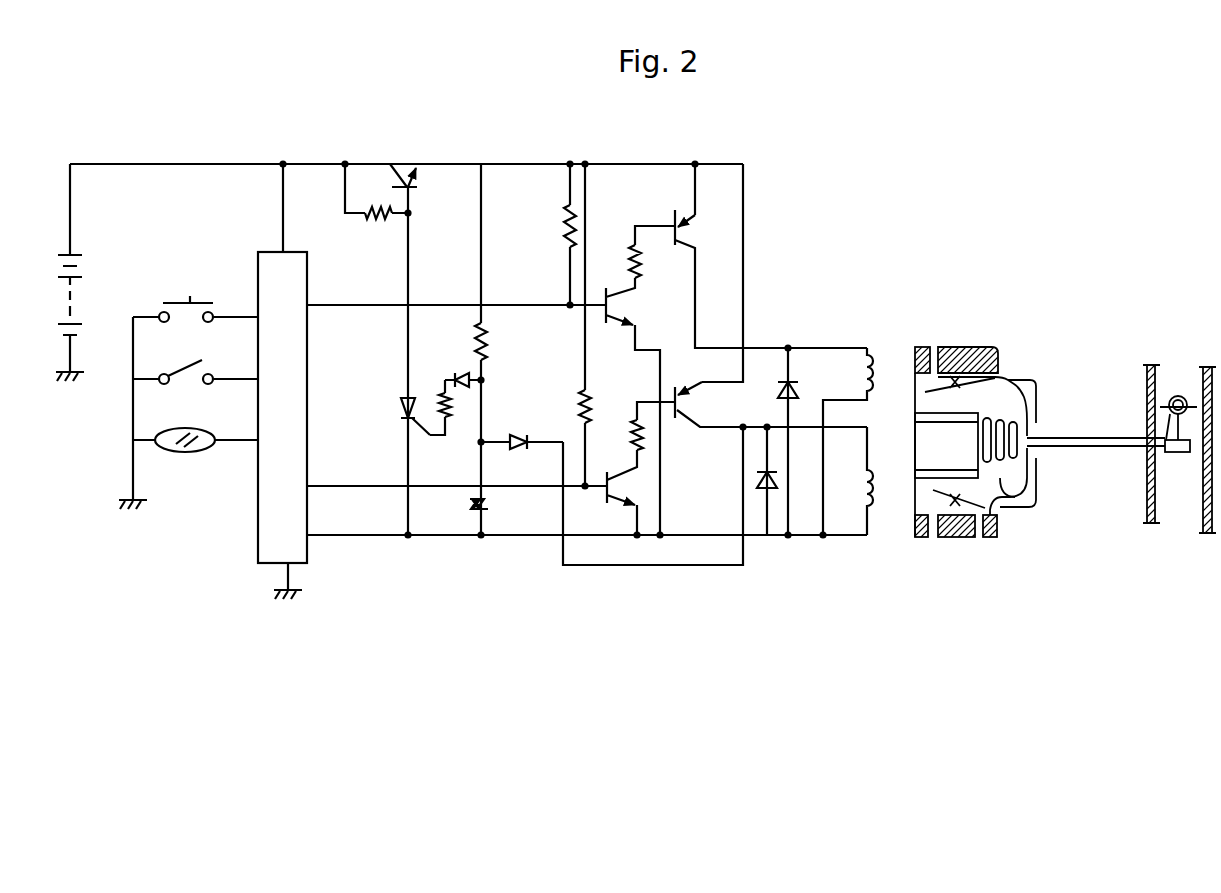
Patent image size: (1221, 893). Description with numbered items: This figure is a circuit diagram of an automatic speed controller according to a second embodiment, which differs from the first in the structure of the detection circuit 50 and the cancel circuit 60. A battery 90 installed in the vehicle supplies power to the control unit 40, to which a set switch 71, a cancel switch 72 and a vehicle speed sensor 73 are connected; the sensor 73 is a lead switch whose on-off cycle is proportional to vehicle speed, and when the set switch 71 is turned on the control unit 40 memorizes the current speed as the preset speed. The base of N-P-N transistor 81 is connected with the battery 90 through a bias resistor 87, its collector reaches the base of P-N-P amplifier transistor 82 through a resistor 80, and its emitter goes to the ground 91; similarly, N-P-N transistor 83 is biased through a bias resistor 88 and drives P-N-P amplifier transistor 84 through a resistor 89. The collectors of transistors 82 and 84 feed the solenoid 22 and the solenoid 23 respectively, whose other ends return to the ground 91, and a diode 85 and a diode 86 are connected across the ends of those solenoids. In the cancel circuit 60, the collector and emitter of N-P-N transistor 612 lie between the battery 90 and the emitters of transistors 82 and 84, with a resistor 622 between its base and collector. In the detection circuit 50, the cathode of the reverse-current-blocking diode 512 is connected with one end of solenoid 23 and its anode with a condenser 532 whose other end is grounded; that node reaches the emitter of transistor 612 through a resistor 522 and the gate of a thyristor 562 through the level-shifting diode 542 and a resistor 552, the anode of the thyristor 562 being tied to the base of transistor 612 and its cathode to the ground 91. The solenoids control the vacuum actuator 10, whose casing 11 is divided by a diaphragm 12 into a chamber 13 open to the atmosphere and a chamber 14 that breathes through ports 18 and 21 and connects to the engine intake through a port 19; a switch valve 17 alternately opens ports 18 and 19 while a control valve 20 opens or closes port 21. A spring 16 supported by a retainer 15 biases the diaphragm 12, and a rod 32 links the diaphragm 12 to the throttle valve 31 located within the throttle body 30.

The actuator 10 is at (1059, 415).
The casing 11 is at (1020, 377).
The diaphragm 12 is at (1037, 505).
The chamber 13 is at (1040, 380).
The chamber 14 is at (1005, 493).
The retainer 15 is at (978, 443).
The spring 16 is at (1022, 456).
The switch valve 17 is at (989, 540).
The port 18 is at (930, 540).
The port 19 is at (978, 540).
The control valve 20 is at (930, 398).
The port 21 is at (938, 350).
The solenoid 22 is at (870, 348).
The solenoid 23 is at (875, 500).
The throttle body 30 is at (1215, 500).
The throttle valve 31 is at (1170, 397).
The rod 32 is at (1128, 450).
The control unit 40 is at (258, 537).
The detection circuit 50 is at (451, 376).
The cancel circuit 60 is at (401, 316).
The set switch 71 is at (190, 302).
The cancel switch 72 is at (190, 378).
The vehicle speed sensor 73 is at (168, 452).
The resistor 80 is at (633, 250).
The transistor 81 is at (616, 318).
The transistor 82 is at (686, 245).
The transistor 83 is at (613, 498).
The transistor 84 is at (690, 424).
The diode 85 is at (775, 392).
The diode 86 is at (764, 495).
The bias resistor 87 is at (565, 215).
The bias resistor 88 is at (590, 400).
The resistor 89 is at (630, 432).
The battery 90 is at (76, 253).
The ground 91 is at (516, 540).
The diode 512 is at (517, 432).
The resistor 522 is at (487, 325).
The condenser 532 is at (493, 507).
The diode 542 is at (463, 372).
The resistor 552 is at (447, 422).
The thyristor 562 is at (400, 405).
The transistor 612 is at (414, 194).
The resistor 622 is at (376, 215).